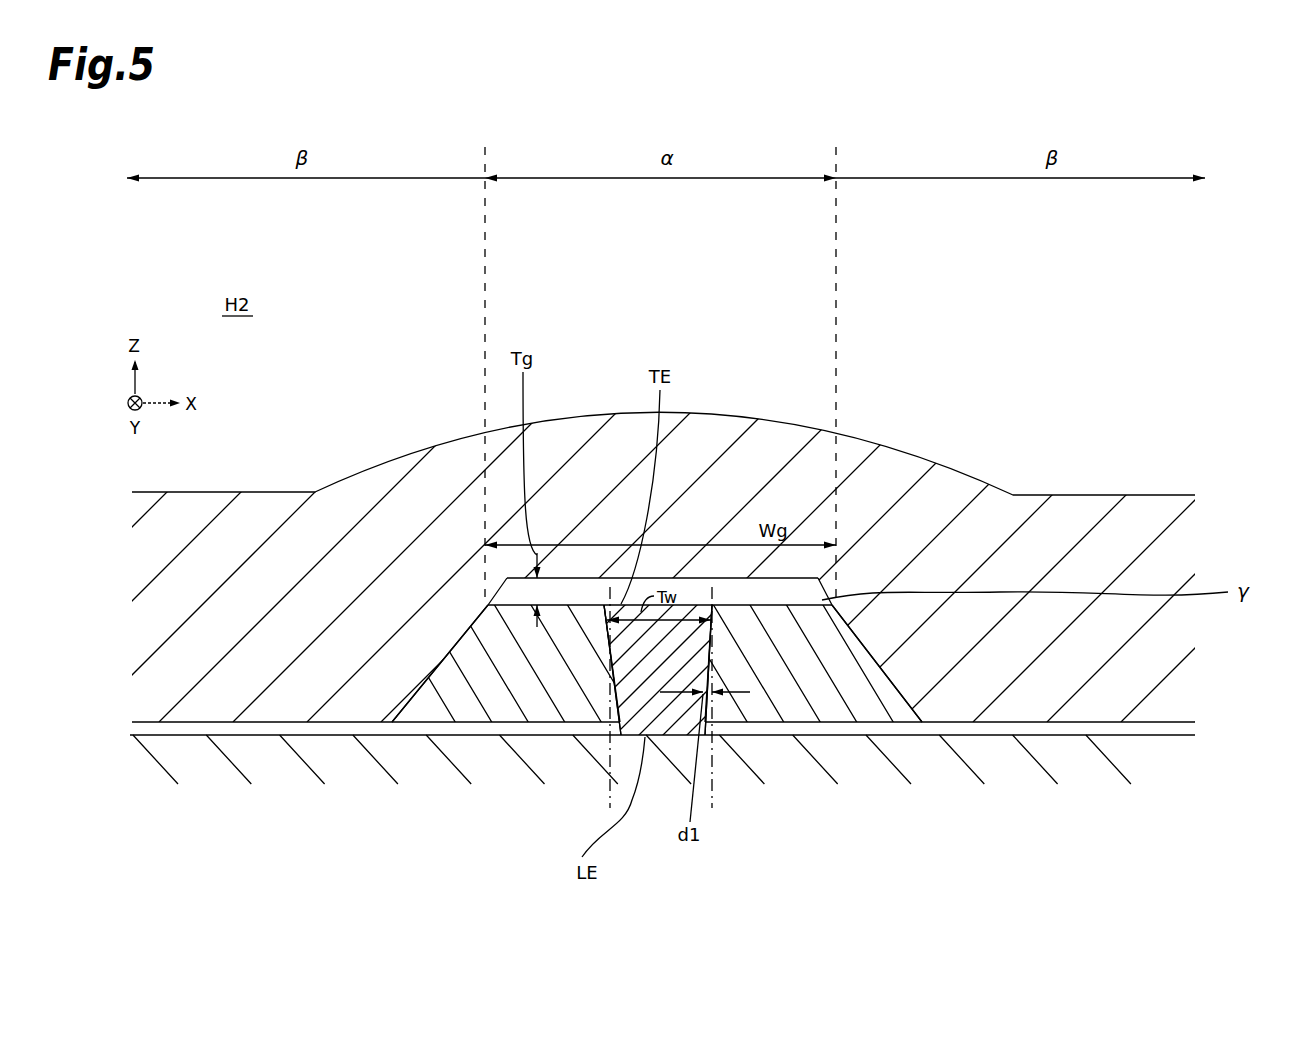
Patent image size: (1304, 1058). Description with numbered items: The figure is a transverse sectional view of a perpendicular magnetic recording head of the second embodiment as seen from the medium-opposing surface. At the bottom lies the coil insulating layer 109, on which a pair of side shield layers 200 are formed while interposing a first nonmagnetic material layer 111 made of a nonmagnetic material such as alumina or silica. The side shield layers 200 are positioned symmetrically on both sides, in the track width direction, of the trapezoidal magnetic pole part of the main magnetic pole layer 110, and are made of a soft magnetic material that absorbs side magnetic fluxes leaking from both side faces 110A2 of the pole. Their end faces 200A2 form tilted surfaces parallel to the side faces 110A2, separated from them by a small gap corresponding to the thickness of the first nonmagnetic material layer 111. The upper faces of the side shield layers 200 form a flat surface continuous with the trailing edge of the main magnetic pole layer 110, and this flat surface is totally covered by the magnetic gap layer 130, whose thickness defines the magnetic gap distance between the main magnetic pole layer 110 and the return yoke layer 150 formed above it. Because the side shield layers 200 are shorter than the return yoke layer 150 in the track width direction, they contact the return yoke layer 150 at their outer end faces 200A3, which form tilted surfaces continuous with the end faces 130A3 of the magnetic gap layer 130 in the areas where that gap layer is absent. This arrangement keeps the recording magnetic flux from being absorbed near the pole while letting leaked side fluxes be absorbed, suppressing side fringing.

The coil insulating layer 109 is at (1137, 757).
The main magnetic pole layer 110 is at (658, 705).
The first nonmagnetic material layer 111 is at (182, 727).
The magnetic gap layer 130 is at (750, 592).
The return yoke layer 150 is at (957, 497).
The side shield layers 200 is at (453, 690).
The side faces 110A2 is at (605, 604).
The end faces of the magnetic gap layer 130A3 is at (497, 582).
The end faces 200A2 is at (603, 677).
The end faces 200A3 is at (437, 662).